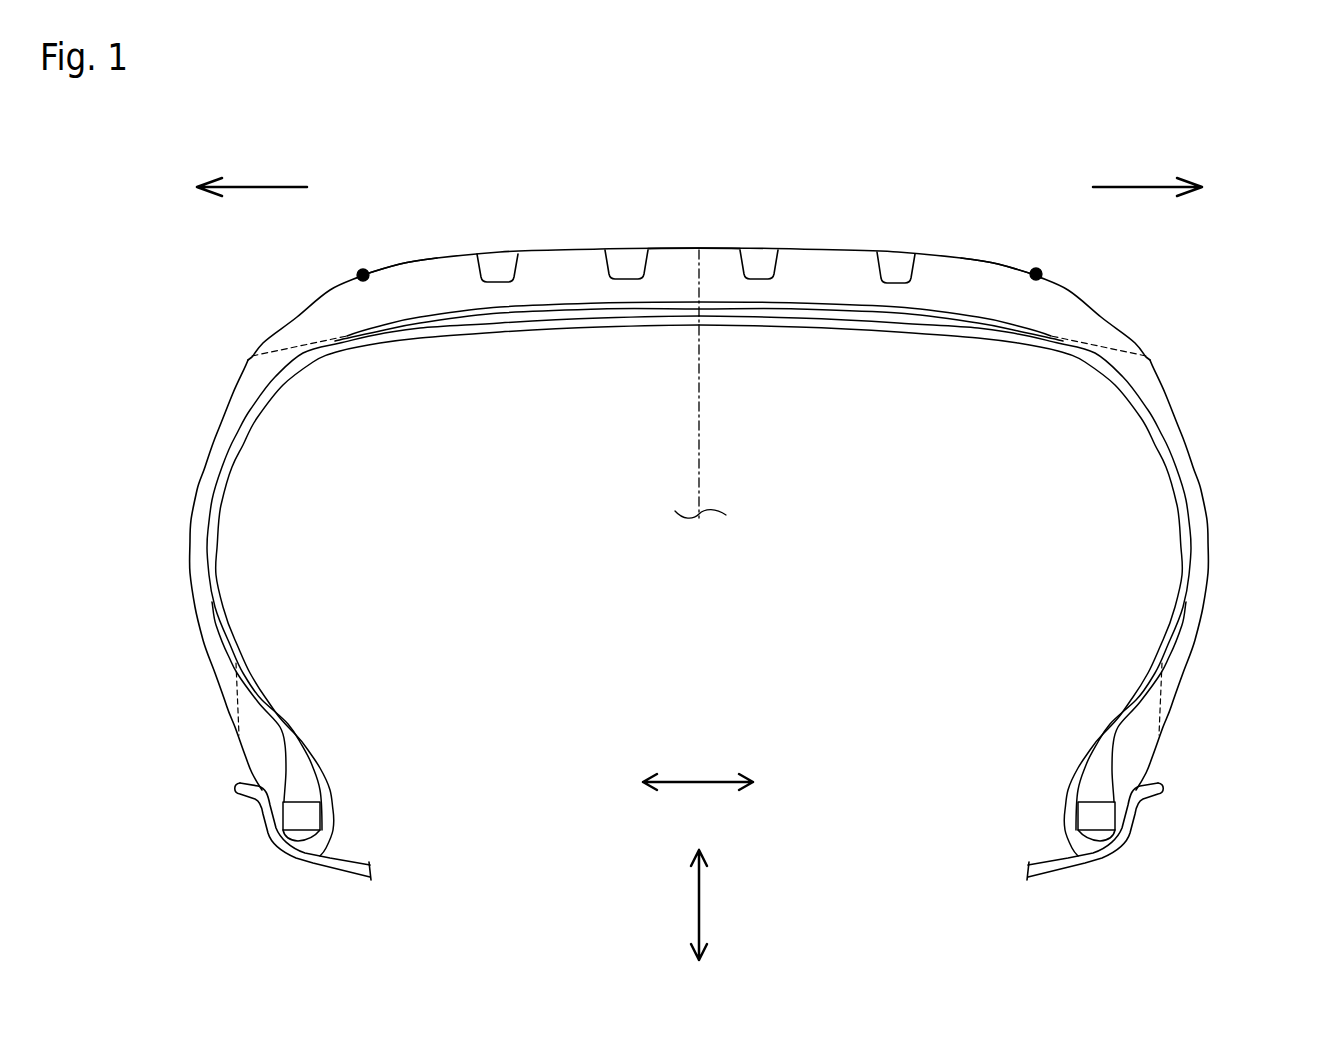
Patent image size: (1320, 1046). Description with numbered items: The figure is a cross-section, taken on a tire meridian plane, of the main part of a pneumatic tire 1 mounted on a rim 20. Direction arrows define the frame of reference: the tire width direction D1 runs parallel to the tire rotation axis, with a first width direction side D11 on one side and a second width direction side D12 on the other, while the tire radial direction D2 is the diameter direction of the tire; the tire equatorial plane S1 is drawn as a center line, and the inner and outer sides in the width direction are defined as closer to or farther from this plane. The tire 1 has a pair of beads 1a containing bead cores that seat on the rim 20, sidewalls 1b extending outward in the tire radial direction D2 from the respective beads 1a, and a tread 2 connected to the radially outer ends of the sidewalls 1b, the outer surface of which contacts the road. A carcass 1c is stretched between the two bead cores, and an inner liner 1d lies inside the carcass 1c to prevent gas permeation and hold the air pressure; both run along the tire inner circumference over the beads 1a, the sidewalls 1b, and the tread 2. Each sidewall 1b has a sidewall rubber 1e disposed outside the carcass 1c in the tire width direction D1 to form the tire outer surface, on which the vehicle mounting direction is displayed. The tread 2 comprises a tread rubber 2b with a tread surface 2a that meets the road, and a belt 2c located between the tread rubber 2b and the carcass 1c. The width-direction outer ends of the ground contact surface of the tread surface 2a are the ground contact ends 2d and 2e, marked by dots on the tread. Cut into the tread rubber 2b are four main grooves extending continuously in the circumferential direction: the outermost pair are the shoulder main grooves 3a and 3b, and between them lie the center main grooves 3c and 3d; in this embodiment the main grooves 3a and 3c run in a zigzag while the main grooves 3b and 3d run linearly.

The pneumatic tire 1 is at (1213, 249).
The bead 1a is at (221, 768).
The sidewall 1b is at (193, 426).
The carcass 1c is at (457, 327).
The inner liner 1d is at (847, 324).
The sidewall rubber 1e is at (197, 505).
The tread 2 is at (581, 233).
The tread surface 2a is at (437, 256).
The tread rubber 2b is at (819, 243).
The belt 2c is at (577, 310).
The ground contact end 2d is at (363, 272).
The ground contact end 2e is at (1036, 271).
The shoulder main groove 3a is at (502, 243).
The shoulder main groove 3b is at (899, 244).
The center main groove 3c is at (631, 243).
The center main groove 3d is at (762, 243).
The rim 20 is at (300, 866).
The tire equatorial plane S1 is at (700, 455).
The tire width direction D1 is at (698, 793).
The tire radial direction D2 is at (713, 905).
The first width direction side D11 is at (229, 189).
The second width direction side D12 is at (1171, 189).